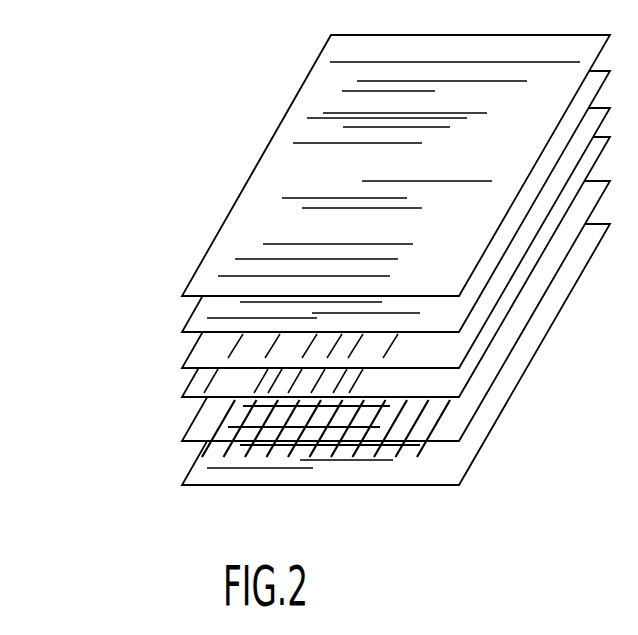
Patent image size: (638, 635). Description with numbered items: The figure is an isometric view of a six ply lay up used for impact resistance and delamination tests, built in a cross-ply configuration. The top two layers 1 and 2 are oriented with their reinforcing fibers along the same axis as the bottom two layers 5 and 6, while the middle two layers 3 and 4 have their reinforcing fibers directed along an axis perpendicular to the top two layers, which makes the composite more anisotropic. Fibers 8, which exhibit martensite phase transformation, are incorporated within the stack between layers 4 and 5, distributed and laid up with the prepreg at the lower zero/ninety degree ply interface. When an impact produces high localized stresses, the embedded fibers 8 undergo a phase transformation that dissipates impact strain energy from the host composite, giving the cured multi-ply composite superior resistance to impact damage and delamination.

The top layer 1 is at (242, 186).
The second layer 2 is at (187, 301).
The middle layer 3 is at (196, 334).
The middle layer 4 is at (197, 370).
The bottom layer 5 is at (197, 440).
The bottom layer 6 is at (197, 489).
The fibers which exhibit martensite phase transformation 8 is at (214, 412).